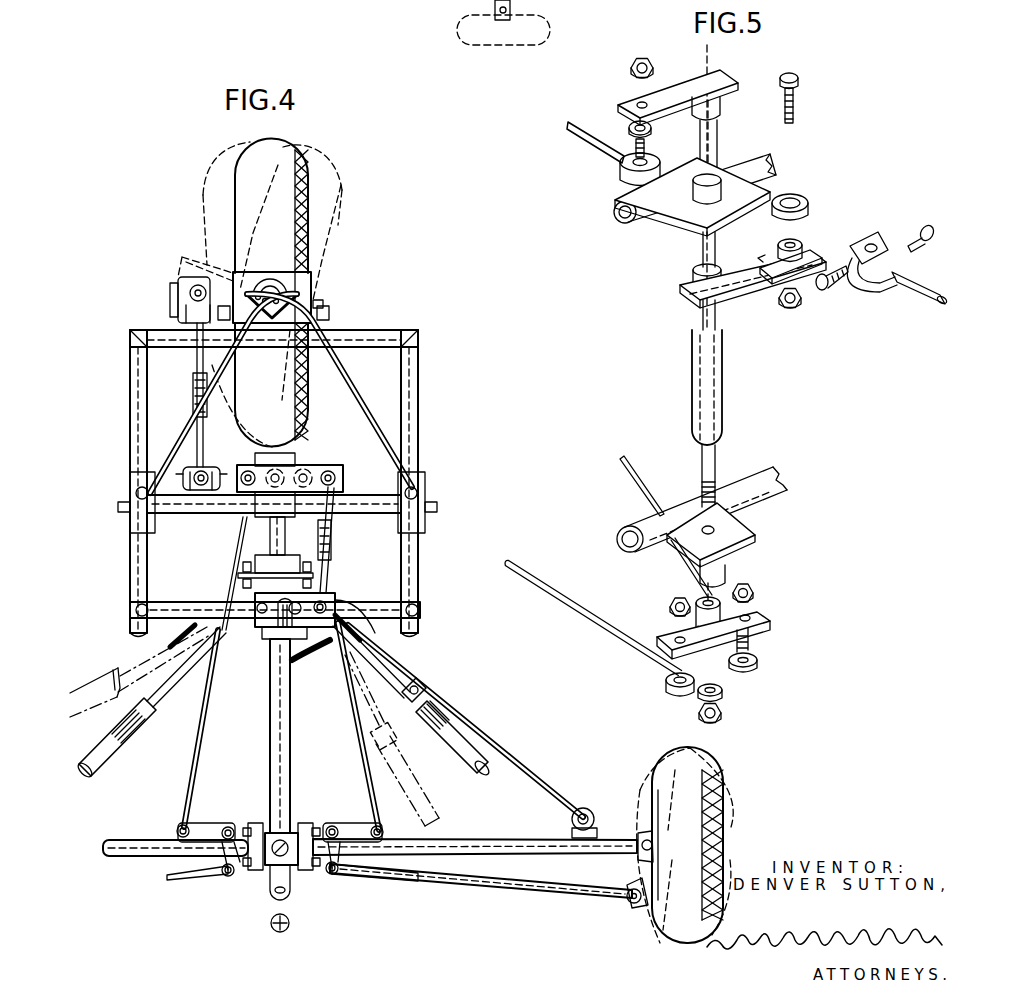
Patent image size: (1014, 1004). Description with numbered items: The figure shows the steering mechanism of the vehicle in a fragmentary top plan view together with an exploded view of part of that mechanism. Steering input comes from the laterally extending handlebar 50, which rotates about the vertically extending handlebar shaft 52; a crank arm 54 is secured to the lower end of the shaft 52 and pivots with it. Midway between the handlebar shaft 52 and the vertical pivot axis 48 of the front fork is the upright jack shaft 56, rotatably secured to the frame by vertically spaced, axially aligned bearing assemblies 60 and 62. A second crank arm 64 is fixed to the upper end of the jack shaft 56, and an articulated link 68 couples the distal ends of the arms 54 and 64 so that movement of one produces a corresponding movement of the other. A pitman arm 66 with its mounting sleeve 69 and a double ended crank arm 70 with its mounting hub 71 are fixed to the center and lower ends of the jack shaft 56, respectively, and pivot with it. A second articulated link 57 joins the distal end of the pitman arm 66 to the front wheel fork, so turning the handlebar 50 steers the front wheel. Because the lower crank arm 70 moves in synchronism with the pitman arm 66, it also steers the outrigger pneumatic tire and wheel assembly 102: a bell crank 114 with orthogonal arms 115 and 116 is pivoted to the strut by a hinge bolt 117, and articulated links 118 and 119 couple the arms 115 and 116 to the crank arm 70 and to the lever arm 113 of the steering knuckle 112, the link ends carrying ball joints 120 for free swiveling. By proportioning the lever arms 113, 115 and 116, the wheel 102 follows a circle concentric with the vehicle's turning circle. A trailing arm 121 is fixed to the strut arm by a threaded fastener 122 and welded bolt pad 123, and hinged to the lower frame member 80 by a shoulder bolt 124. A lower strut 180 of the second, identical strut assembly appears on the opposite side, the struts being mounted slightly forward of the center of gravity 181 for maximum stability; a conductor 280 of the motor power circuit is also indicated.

In FIG. 4, the vertical pivot axis 48 is at (282, 288).
In FIG. 4, the handlebar 50 is at (462, 757).
In FIG. 4, the handlebar shaft 52 is at (273, 608).
In FIG. 4, the crank arm 54 is at (375, 633).
In FIG. 4, the jack shaft 56 is at (281, 467).
In FIG. 5, the jack shaft 56 is at (717, 135).
In FIG. 4, the second articulated link 57 is at (196, 363).
In FIG. 5, the second articulated link 57 is at (913, 297).
In FIG. 4, the bearing assembly 60 is at (300, 464).
In FIG. 5, the bearing assembly 60 is at (753, 193).
In FIG. 5, the bearing assembly 62 is at (745, 528).
In FIG. 4, the second crank arm 64 is at (345, 482).
In FIG. 5, the second crank arm 64 is at (723, 78).
In FIG. 4, the pitman arm 66 is at (223, 474).
In FIG. 5, the pitman arm 66 is at (808, 253).
In FIG. 4, the articulated link 68 is at (332, 540).
In FIG. 5, the articulated link 68 is at (603, 152).
In FIG. 5, the mounting sleeve 69 is at (723, 407).
In FIG. 5, the double ended crank arm 70 is at (758, 618).
In FIG. 5, the mounting hub 71 is at (755, 602).
In FIG. 4, the lower frame member 80 is at (290, 730).
In FIG. 4, the pneumatic tire and wheel assembly 102 is at (727, 795).
In FIG. 4, the steering knuckle 112 is at (640, 837).
In FIG. 4, the lever arm 113 is at (637, 877).
In FIG. 4, the bell crank 114 is at (323, 826).
In FIG. 4, the bell crank arm 115 is at (357, 822).
In FIG. 4, the bell crank arm 116 is at (345, 869).
In FIG. 4, the hinge bolt 117 is at (335, 818).
In FIG. 4, the articulated link 118 is at (365, 766).
In FIG. 5, the articulated link 118 is at (612, 637).
In FIG. 4, the articulated link 119 is at (547, 891).
In FIG. 5, the ball joint 120 is at (668, 688).
In FIG. 4, the trailing arm 121 is at (487, 727).
In FIG. 4, the threaded fastener 122 is at (208, 737).
In FIG. 4, the bolt pad 123 is at (572, 828).
In FIG. 4, the shoulder bolt 124 is at (308, 561).
In FIG. 4, the lower strut 180 is at (497, 838).
In FIG. 4, the center of gravity 181 is at (290, 930).
In FIG. 4, the conductor 280 is at (433, 0).